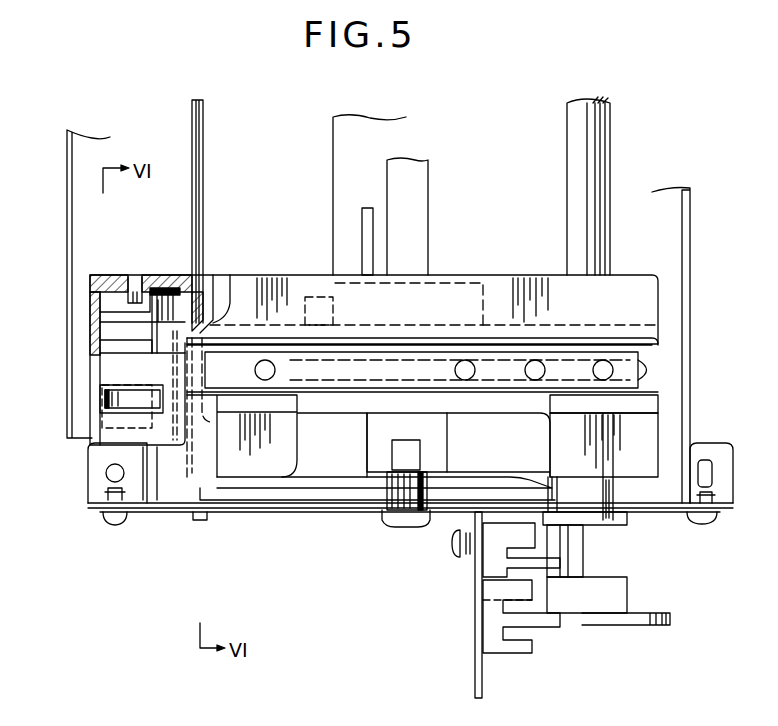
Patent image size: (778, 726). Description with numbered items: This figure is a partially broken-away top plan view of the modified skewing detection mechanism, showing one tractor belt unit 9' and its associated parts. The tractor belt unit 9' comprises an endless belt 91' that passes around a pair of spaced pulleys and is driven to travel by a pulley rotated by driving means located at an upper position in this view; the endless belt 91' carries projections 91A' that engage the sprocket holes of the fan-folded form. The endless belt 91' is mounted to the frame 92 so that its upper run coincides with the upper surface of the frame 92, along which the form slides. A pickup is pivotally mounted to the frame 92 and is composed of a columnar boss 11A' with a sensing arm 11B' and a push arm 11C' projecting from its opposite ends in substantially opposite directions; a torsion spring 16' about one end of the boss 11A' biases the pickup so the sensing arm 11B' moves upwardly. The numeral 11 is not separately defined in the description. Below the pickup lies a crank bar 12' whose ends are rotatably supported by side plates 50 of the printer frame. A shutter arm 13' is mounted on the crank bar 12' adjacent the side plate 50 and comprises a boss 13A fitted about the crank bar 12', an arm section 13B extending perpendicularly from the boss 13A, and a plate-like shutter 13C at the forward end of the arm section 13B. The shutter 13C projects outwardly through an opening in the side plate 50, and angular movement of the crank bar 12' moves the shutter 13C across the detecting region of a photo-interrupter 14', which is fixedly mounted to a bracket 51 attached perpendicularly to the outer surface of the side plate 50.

The tractor belt unit 9' is at (422, 275).
The crank bar 12' is at (223, 211).
The frame 92 is at (88, 290).
The torsion spring 16' is at (158, 294).
The columnar boss 11A' is at (85, 294).
The push arm 11C' is at (103, 316).
The holder 11 is at (152, 338).
The sensing arm 11B' is at (92, 406).
The endless belt 91' is at (426, 312).
The projections 91A' is at (527, 309).
The boss 13A is at (183, 483).
The side plate 50 is at (236, 512).
The shutter arm 13' is at (384, 528).
The arm section 13B is at (312, 512).
The photo-interrupter 14' is at (528, 519).
The bracket 51 is at (475, 648).
The shutter 13C is at (537, 567).